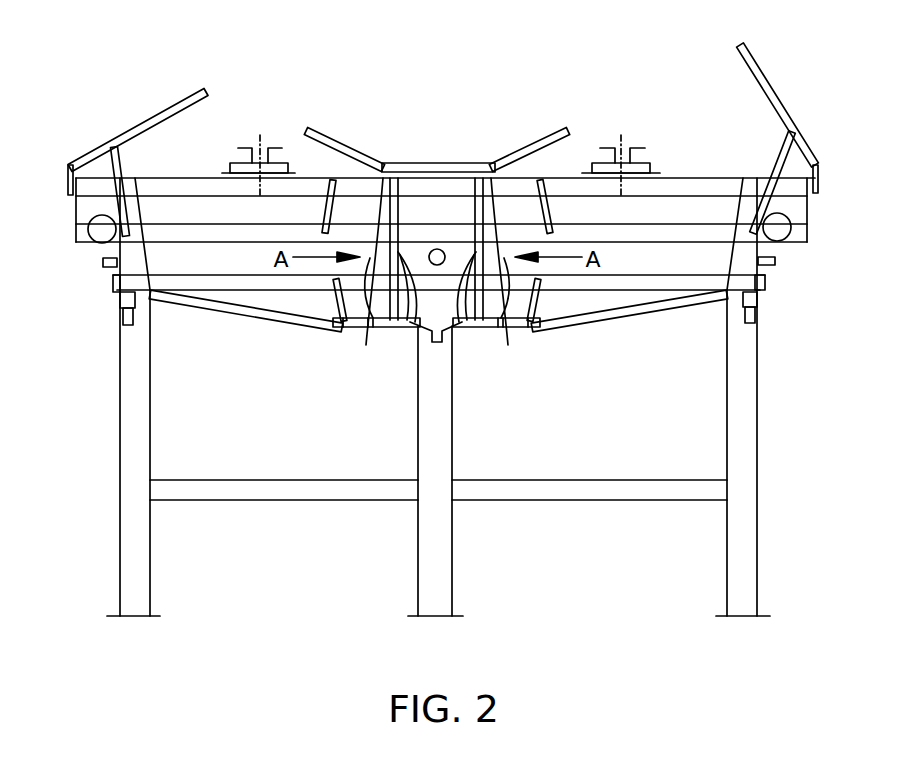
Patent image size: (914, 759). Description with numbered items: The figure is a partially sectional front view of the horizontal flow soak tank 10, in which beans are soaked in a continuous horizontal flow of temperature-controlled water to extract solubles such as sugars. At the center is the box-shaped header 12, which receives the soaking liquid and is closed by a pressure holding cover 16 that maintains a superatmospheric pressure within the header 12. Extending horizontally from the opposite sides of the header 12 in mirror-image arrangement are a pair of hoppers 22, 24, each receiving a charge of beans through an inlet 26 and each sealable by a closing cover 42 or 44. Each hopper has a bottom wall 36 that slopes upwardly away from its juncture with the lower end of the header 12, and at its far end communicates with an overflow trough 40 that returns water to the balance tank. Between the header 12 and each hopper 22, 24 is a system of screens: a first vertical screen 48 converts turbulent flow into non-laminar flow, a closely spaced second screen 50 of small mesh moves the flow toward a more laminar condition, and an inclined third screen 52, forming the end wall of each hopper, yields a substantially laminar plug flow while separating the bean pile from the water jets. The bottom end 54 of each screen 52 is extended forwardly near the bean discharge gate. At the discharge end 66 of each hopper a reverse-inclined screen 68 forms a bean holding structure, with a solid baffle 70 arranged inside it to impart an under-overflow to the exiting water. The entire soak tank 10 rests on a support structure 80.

The horizontal flow soak tank 10 is at (574, 70).
The header 12 is at (435, 205).
The pressure holding cover 16 is at (410, 162).
The hopper 22 is at (180, 207).
The hopper 24 is at (680, 207).
The inlet 26 is at (263, 147).
The bottom wall 36 is at (250, 317).
The overflow trough 40 is at (118, 250).
The closing cover 42 is at (147, 115).
The closing cover 44 is at (333, 178).
The first vertical screen 48 is at (415, 328).
The second screen 50 is at (400, 322).
The third screen 52 is at (366, 345).
The bottom end 54 is at (363, 303).
The discharge end 66 is at (75, 229).
The screen 68 is at (147, 268).
The solid baffle 70 is at (115, 205).
The support structure 80 is at (128, 436).